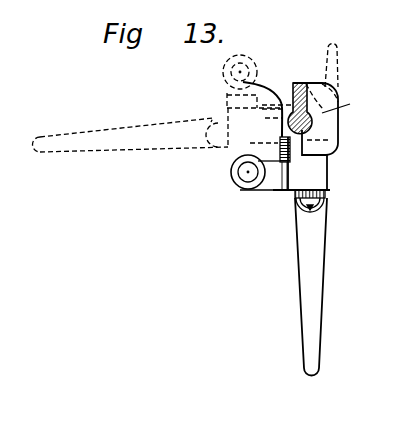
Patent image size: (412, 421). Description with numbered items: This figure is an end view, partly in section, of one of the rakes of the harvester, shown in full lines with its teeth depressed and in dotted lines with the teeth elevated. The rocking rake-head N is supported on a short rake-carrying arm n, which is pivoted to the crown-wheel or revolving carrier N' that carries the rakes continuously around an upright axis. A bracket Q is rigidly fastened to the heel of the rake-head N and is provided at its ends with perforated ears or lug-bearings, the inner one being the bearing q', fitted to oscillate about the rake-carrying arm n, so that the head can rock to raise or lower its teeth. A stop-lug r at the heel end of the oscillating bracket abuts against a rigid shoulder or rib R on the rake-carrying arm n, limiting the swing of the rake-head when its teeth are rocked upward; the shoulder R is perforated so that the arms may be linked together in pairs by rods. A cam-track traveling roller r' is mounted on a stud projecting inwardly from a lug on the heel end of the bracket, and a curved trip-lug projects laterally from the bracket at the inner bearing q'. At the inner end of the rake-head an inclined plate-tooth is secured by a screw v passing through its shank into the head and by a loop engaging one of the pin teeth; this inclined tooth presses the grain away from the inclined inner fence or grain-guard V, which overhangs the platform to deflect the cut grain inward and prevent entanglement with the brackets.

The crown-wheel or revolving carrier N' is at (131, 130).
The cam-track traveling roller r' is at (232, 132).
The rigid shoulder or rib R is at (301, 84).
The rake-carrying arm n is at (315, 125).
The perforated ear or lug-bearing q' is at (342, 107).
The stop-lug r is at (276, 157).
The bracket Q is at (279, 153).
The screw v is at (310, 218).
The rake-head N is at (315, 200).
The inner fence or grain-guard V is at (317, 287).